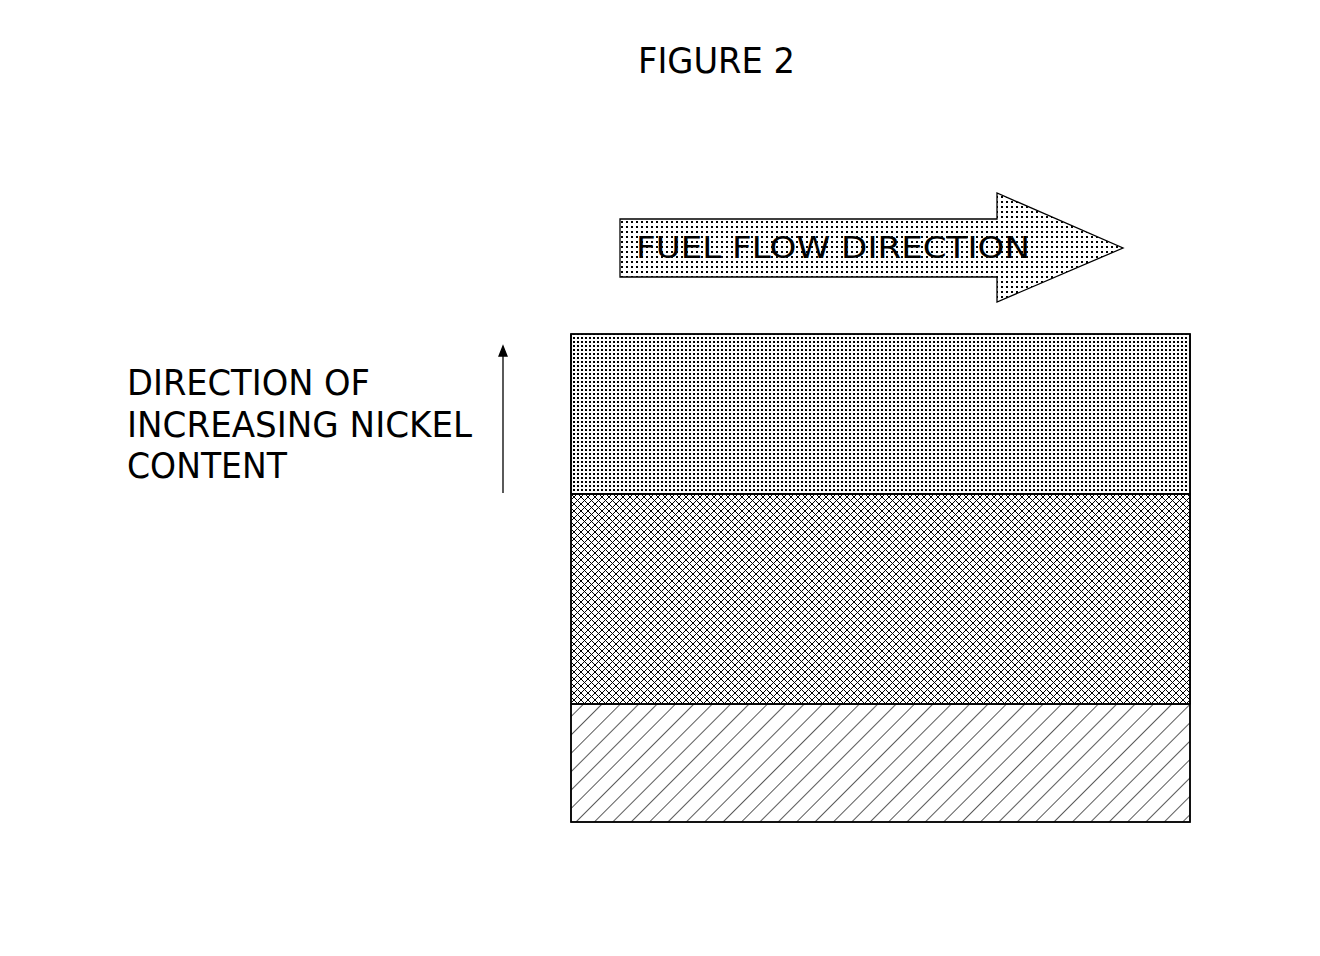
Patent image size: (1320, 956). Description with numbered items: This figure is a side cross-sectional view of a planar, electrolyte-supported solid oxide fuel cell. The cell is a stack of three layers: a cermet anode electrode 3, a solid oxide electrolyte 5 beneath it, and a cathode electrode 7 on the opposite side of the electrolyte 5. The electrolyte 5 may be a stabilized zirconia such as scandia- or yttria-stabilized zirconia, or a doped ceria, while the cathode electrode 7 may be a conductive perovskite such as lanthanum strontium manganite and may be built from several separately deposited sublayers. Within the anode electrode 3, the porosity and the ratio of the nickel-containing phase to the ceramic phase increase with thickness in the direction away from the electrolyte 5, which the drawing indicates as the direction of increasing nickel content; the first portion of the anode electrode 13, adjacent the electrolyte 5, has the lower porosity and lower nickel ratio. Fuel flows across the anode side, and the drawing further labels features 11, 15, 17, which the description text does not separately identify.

The anode electrode 3 is at (1192, 405).
The solid oxide electrolyte 5 is at (571, 608).
The cathode electrode 7 is at (571, 739).
The interface between top layer and intermediate layer 11 is at (571, 494).
The first portion of the anode electrode 13 is at (1191, 336).
The upstream end of top layer 15 is at (571, 334).
The downstream end of intermediate layer 17 is at (1190, 502).